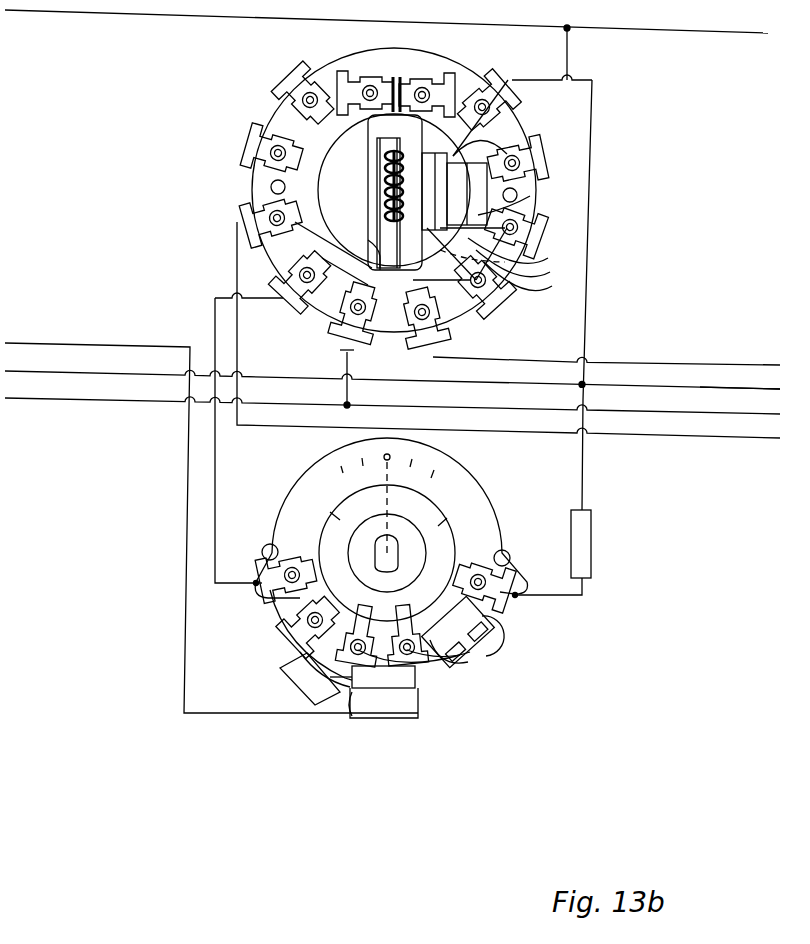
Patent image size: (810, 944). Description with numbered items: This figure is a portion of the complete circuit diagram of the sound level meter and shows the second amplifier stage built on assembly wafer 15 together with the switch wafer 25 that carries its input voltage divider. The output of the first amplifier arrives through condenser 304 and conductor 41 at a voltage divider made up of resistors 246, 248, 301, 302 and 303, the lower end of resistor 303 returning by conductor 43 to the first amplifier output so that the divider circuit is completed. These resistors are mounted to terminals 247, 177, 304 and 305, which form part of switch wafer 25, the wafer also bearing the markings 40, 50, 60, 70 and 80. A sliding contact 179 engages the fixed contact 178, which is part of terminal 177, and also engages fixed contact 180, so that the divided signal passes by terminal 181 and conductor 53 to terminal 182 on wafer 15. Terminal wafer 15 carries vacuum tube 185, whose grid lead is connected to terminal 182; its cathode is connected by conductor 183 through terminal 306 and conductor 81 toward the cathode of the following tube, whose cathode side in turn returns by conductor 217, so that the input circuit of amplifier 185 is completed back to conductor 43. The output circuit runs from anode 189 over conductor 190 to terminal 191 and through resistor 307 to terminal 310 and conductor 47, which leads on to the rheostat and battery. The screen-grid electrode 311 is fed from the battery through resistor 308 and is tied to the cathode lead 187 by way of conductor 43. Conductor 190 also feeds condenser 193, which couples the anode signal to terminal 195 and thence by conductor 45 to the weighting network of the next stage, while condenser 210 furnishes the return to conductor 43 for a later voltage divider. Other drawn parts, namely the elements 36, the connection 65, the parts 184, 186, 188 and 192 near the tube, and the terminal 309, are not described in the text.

The assembly wafer 15 is at (455, 64).
The switch wafer 25 is at (488, 489).
The terminal block 36 is at (286, 78).
The conductor 41 is at (28, 344).
The conductor 43 is at (36, 371).
The conductor 45 is at (738, 354).
The conductor 47 is at (38, 12).
The conductor 53 is at (216, 530).
The connector 65 is at (346, 353).
The conductor 81 is at (238, 306).
The terminal 177 is at (500, 641).
The fixed contact 178 is at (414, 588).
The sliding contact 179 is at (437, 531).
The fixed contact 180 is at (326, 566).
The terminal 181 is at (262, 590).
The terminal 182 is at (296, 304).
The conductor 183 is at (344, 282).
The coil 184 is at (385, 222).
The vacuum tube 185 is at (377, 145).
The armature 186 is at (395, 163).
The cathode lead 187 is at (386, 278).
The conductor 188 is at (364, 338).
The anode 189 is at (416, 152).
The conductor 190 is at (527, 266).
The terminal 191 is at (546, 234).
The conductor 192 is at (523, 253).
The condenser 193 is at (531, 280).
The terminal 195 is at (432, 352).
The condenser 210 is at (735, 380).
The conductor 217 is at (26, 398).
The resistor 246 is at (316, 697).
The terminal 247 is at (286, 643).
The resistor 248 is at (402, 646).
The resistor 301 is at (470, 661).
The resistor 302 is at (494, 613).
The resistor 303 is at (588, 523).
The condenser 304 is at (352, 716).
The terminal 305 is at (530, 597).
The terminal 306 is at (245, 222).
The resistor 307 is at (521, 202).
The resistor 308 is at (460, 254).
The terminal block 309 is at (462, 136).
The terminal 310 is at (546, 168).
The screen-grid electrode 311 is at (402, 162).
The dial graduation 40 is at (441, 465).
The dial graduation 50 is at (416, 453).
The dial graduation 60 is at (386, 444).
The dial graduation 70 is at (360, 453).
The dial graduation 80 is at (334, 461).